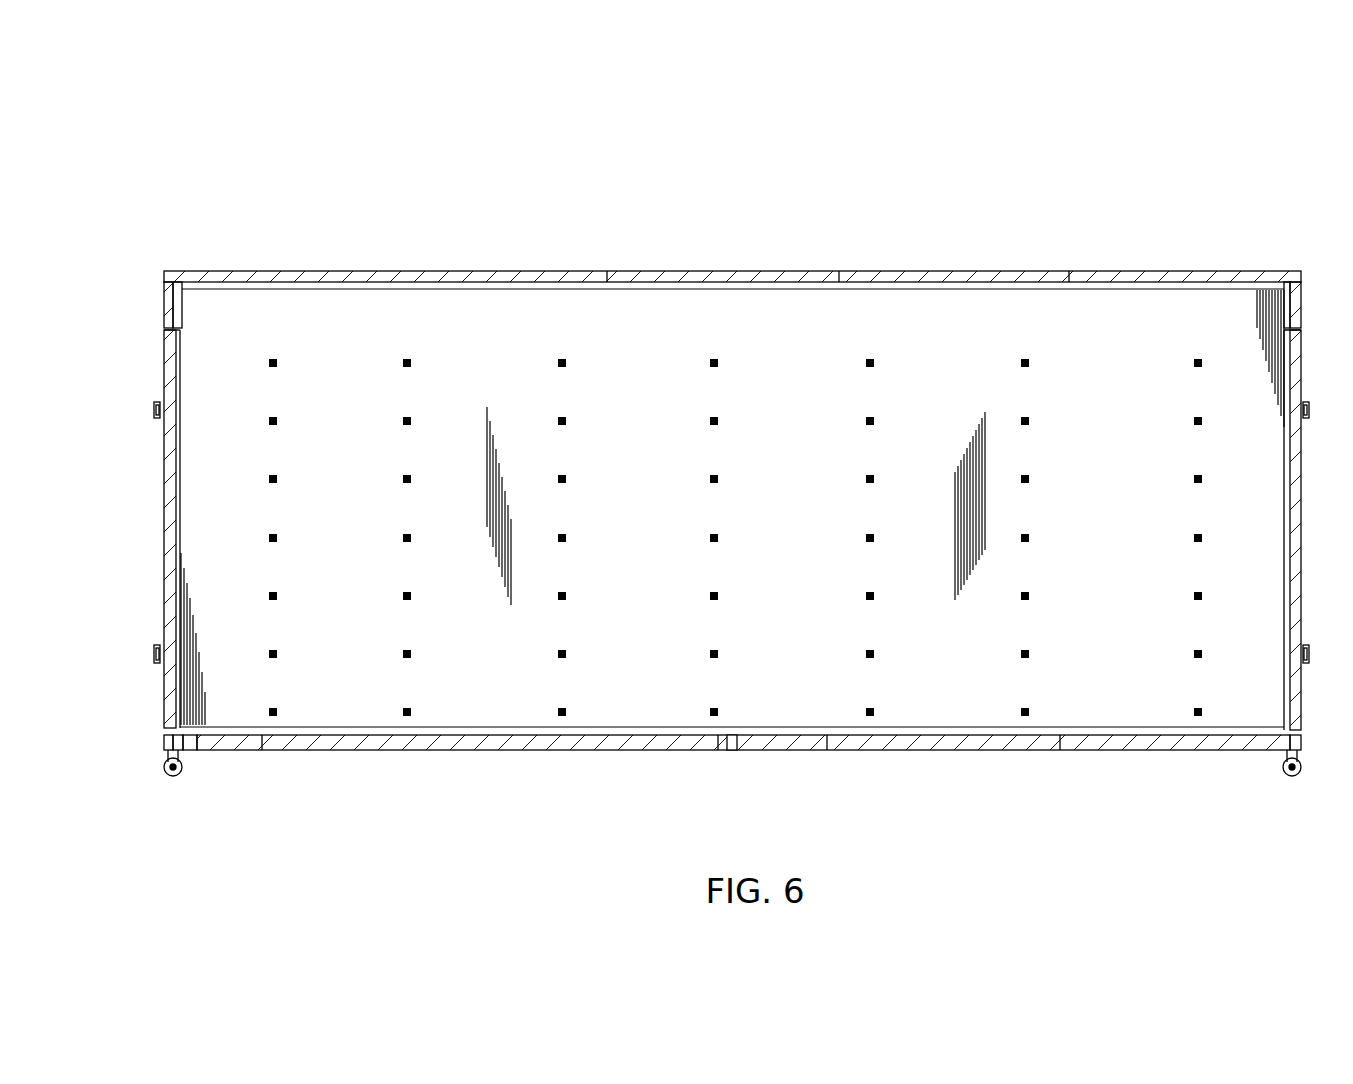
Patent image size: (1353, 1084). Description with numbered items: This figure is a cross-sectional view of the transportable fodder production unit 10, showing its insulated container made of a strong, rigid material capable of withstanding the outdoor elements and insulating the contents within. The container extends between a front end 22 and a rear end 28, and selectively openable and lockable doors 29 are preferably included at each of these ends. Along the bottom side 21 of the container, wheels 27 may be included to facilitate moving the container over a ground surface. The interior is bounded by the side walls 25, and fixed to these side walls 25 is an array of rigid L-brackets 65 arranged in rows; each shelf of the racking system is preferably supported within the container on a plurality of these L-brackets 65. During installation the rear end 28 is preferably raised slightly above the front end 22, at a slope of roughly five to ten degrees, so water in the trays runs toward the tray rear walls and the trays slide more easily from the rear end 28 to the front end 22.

The transportable fodder production unit 10 is at (429, 179).
The bottom side 21 is at (783, 744).
The front end 22 is at (1249, 271).
The side walls 25 is at (646, 407).
The wheels 27 is at (180, 764).
The rear end 28 is at (168, 304).
The doors 29 is at (165, 498).
The L-brackets 65 is at (411, 365).